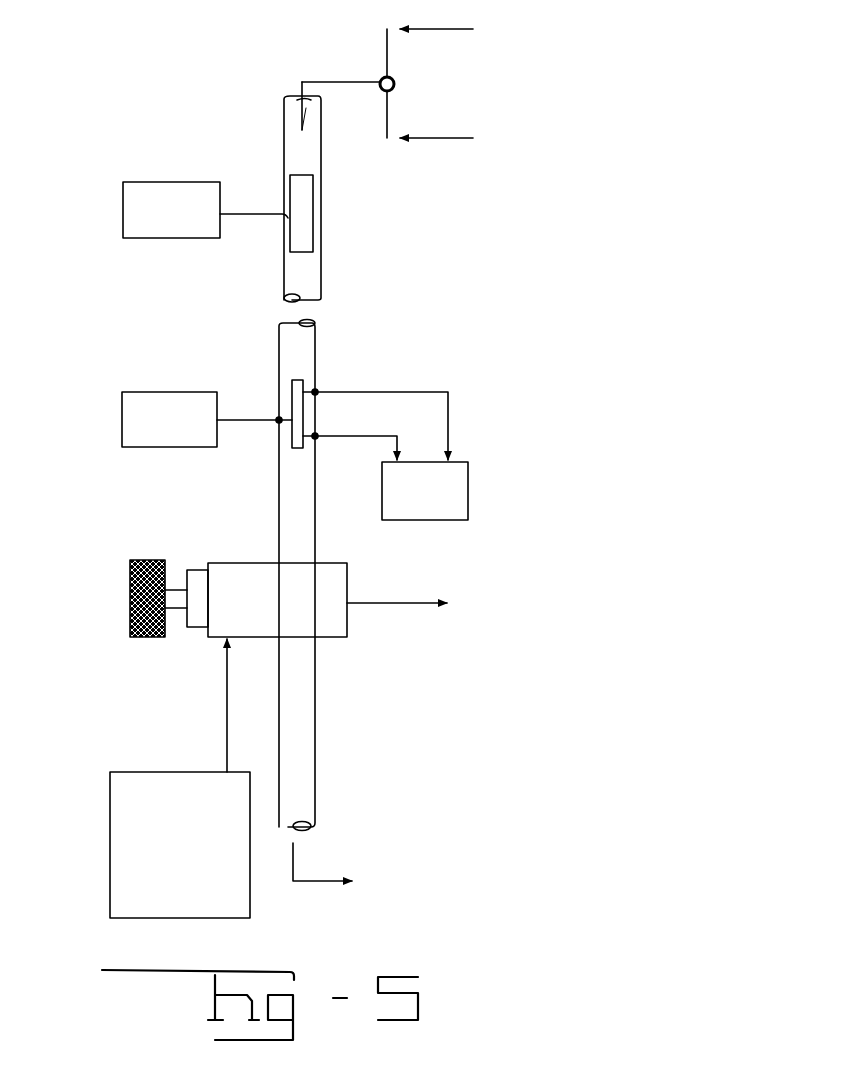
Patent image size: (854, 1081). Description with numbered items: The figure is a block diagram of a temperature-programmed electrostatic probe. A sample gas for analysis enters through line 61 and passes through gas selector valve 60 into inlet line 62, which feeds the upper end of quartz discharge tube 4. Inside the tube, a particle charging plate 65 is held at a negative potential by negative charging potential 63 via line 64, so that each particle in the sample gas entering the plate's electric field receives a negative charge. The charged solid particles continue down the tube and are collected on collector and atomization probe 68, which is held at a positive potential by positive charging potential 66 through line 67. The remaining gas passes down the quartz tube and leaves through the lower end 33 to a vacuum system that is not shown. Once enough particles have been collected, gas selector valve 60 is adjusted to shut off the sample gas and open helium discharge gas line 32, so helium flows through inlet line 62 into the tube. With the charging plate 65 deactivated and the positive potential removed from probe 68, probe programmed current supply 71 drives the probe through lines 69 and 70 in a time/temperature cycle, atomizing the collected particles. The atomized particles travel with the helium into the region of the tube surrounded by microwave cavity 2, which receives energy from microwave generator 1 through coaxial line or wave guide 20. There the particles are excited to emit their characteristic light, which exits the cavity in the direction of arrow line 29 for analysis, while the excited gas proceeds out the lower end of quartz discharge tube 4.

The microwave generator 1 is at (110, 846).
The microwave cavity 2 is at (233, 562).
The quartz discharge tube 4 is at (315, 537).
The coaxial line or wave guide 20 is at (226, 712).
The arrow line 29 is at (412, 608).
The helium discharge gas line 32 is at (432, 30).
The lower end 33 is at (322, 878).
The gas selector valve 60 is at (396, 84).
The line 61 is at (443, 142).
The inlet line 62 is at (326, 54).
The negative charging potential 63 is at (168, 160).
The line 64 is at (268, 188).
The particle charging plate 65 is at (305, 242).
The positive charging potential 66 is at (164, 390).
The line 67 is at (258, 394).
The collector and atomization probe 68 is at (305, 387).
The line 69 is at (420, 392).
The line 70 is at (362, 436).
The probe programmed current supply 71 is at (470, 503).